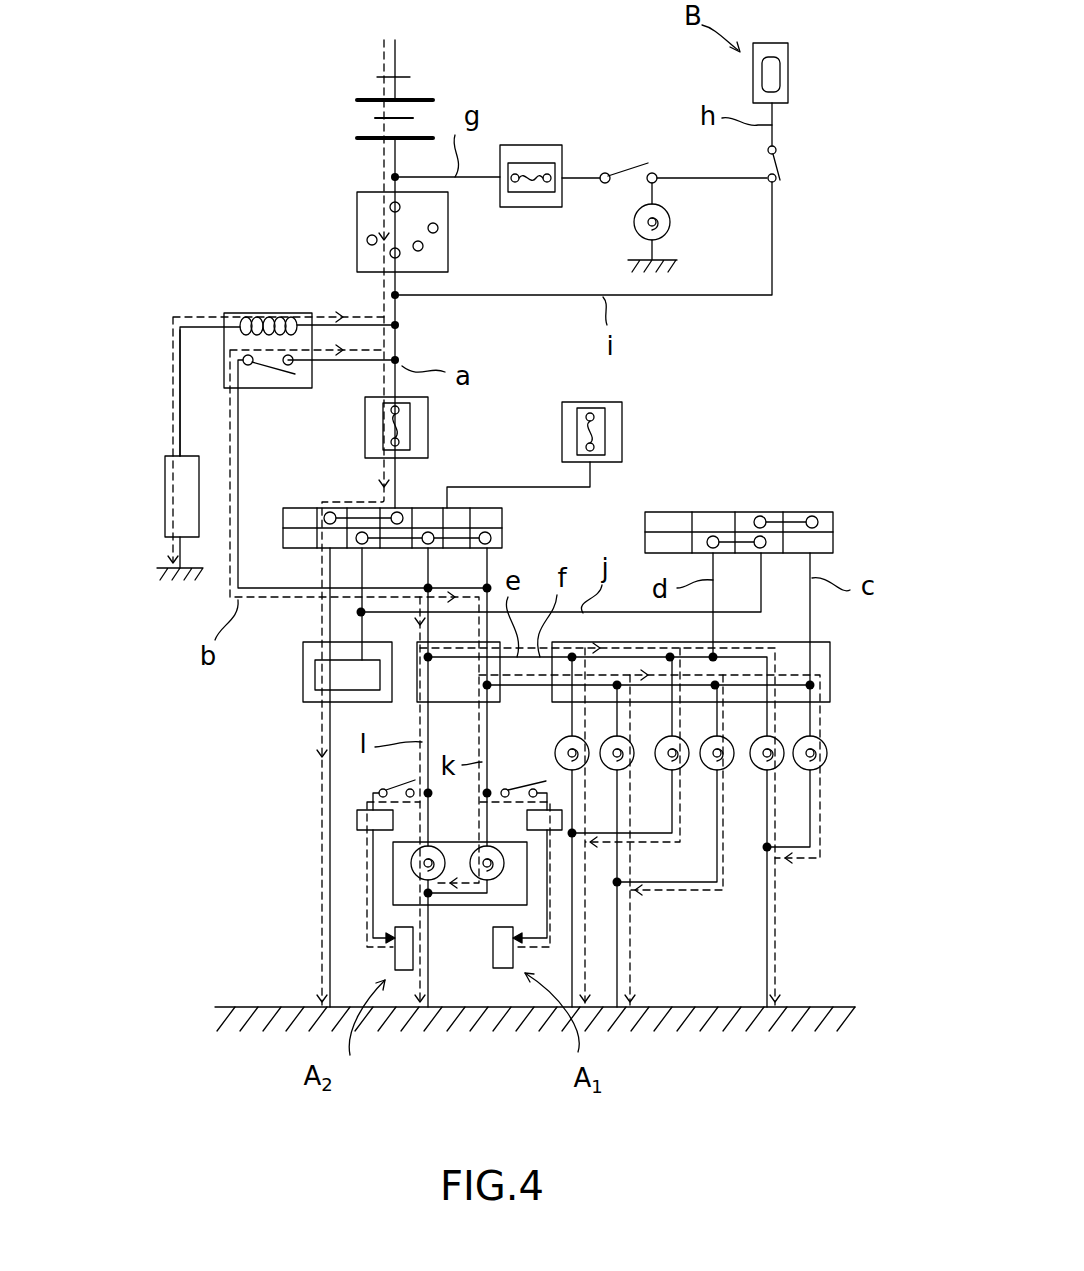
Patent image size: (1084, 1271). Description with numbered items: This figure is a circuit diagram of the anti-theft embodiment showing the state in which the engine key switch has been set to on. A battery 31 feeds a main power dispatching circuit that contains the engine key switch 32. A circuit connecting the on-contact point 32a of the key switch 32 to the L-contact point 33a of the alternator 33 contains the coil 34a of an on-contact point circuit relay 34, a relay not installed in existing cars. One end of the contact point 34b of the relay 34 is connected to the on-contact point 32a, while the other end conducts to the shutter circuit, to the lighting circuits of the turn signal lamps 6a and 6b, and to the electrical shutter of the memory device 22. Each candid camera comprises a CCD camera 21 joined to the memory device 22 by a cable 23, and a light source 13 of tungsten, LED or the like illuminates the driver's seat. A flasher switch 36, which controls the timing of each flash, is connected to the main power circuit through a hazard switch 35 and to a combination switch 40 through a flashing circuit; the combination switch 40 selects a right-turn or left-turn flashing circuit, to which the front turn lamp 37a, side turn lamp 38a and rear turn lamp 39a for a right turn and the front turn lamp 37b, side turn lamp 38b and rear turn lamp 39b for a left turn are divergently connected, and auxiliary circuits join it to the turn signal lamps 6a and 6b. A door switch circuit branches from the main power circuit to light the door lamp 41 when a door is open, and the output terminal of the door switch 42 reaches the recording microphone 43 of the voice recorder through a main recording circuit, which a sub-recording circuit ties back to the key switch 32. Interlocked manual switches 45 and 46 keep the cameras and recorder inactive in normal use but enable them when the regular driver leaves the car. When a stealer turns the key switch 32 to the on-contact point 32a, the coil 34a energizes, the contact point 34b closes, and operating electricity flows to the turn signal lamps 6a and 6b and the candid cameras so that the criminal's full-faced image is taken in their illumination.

The battery 31 is at (366, 93).
The engine key switch 32 is at (355, 208).
The on-contact point 32a is at (388, 255).
The alternator 33 is at (163, 495).
The L-contact point 33a is at (170, 440).
The on-contact point circuit relay 34 is at (230, 313).
The coil 34a is at (264, 315).
The contact point 34b is at (270, 374).
The hazard switch 35 is at (502, 512).
The flasher switch 36 is at (303, 677).
The front turn lamp 37a is at (632, 765).
The front turn lamp 37b is at (587, 765).
The side turn lamp 38a is at (732, 765).
The side turn lamp 38b is at (683, 765).
The rear turn lamp 39a is at (823, 765).
The rear turn lamp 39b is at (780, 765).
The combination switch 40 is at (742, 512).
The door lamp 41 is at (670, 222).
The door switch 42 is at (628, 165).
The recording microphone 43 is at (790, 65).
The manual switch 45 is at (413, 783).
The manual switch 46 is at (778, 160).
The memory device 22 is at (357, 822).
The cable 23 is at (368, 913).
The CCD camera 21 is at (407, 970).
The light source 13 is at (460, 873).
The turn signal lamp 6a is at (502, 880).
The turn signal lamp 6b is at (413, 862).